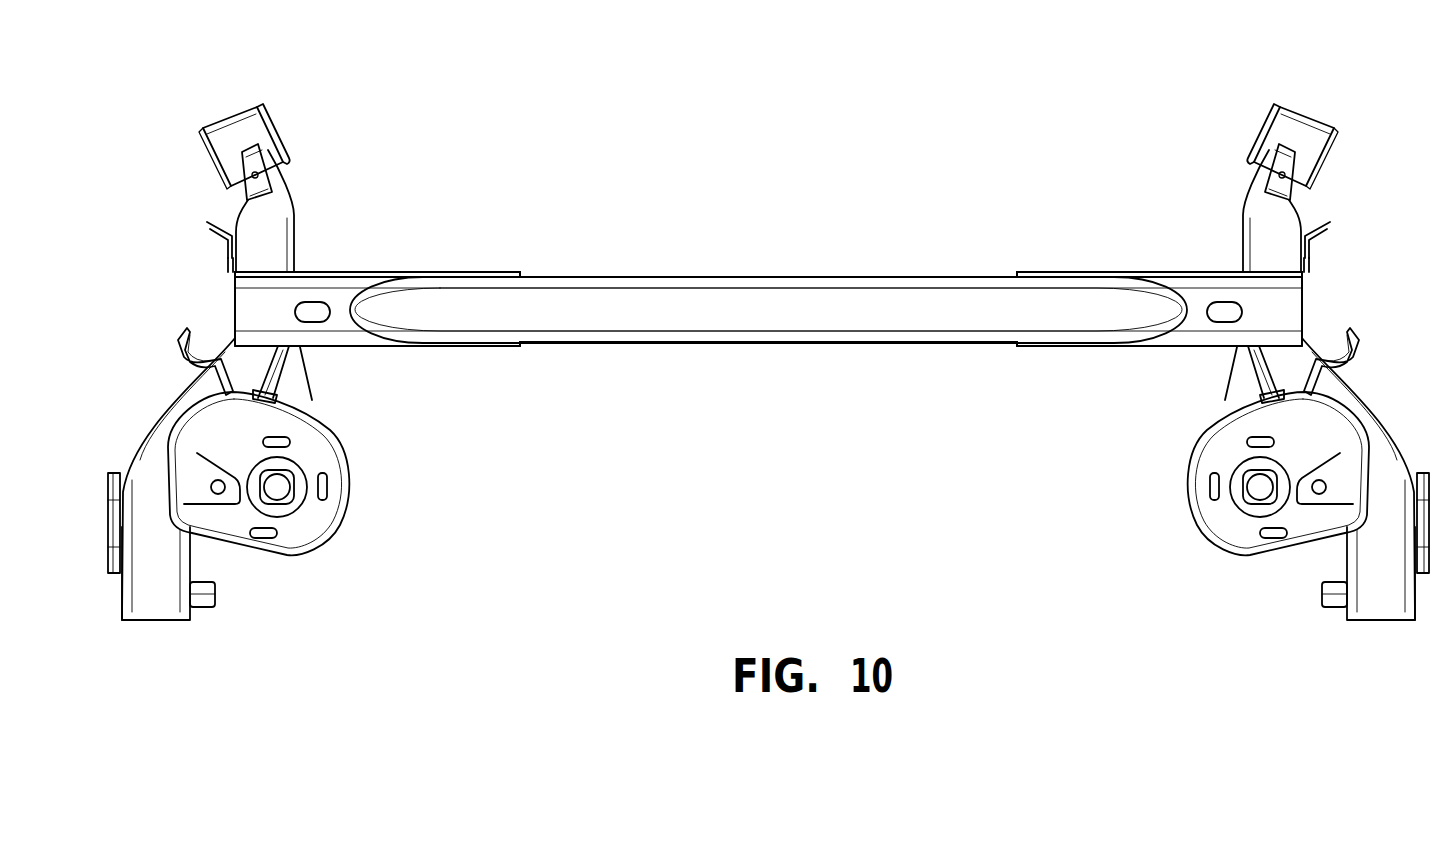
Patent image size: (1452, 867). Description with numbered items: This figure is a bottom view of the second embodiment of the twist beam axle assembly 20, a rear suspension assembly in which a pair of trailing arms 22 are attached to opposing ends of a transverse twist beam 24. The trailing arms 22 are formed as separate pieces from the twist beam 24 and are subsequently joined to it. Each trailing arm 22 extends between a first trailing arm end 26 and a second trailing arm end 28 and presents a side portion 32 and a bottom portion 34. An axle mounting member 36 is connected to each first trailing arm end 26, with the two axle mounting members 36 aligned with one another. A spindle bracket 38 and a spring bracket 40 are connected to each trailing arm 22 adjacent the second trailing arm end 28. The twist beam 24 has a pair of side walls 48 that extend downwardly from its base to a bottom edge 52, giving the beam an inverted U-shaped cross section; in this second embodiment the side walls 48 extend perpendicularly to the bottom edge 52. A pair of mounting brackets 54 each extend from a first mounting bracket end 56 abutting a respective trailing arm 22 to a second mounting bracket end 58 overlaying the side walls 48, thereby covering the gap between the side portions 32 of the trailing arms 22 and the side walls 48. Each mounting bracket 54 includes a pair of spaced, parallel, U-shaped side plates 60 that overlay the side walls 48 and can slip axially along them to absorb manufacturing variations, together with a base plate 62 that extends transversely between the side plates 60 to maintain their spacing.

The twist beam axle assembly 20 is at (930, 208).
The trailing arm 22 is at (148, 413).
The twist beam 24 is at (1125, 271).
The first trailing arm end 26 is at (237, 175).
The second trailing arm end 28 is at (162, 613).
The side portion 32 is at (282, 357).
The bottom portion 34 is at (207, 383).
The axle mounting member 36 is at (249, 125).
The spindle bracket 38 is at (115, 578).
The spring bracket 40 is at (348, 512).
The side wall 48 is at (567, 276).
The bottom edge 52 is at (693, 276).
The mounting bracket 54 is at (453, 271).
The first mounting bracket end 56 is at (232, 278).
The second mounting bracket end 58 is at (513, 271).
The side plate 60 is at (361, 271).
The base plate 62 is at (317, 287).